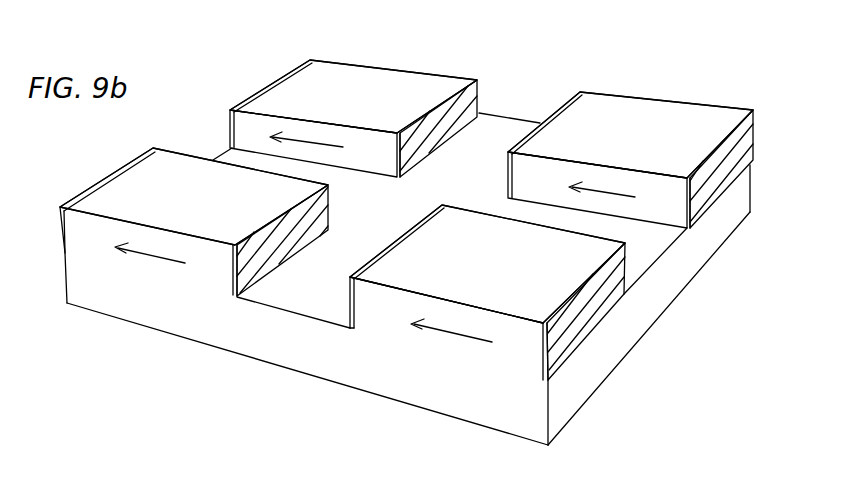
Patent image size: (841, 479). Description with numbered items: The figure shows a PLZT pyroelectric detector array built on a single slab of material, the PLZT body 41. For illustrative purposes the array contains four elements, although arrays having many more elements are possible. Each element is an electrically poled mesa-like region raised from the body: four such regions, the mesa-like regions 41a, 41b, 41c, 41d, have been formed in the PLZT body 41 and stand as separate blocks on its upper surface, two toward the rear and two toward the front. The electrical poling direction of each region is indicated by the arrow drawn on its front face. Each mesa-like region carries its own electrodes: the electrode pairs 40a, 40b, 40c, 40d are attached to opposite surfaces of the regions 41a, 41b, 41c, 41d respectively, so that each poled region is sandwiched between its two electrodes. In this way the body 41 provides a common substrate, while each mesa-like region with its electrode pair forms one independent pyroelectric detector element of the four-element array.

The PLZT body 41 is at (183, 327).
The electrode pair 40a is at (267, 260).
The electrode pair 40b is at (455, 110).
The electrode pair 40c is at (572, 335).
The electrode pair 40d is at (548, 117).
The electrically poled mesa-like region 41a is at (216, 203).
The electrically poled mesa-like region 41b is at (295, 102).
The electrically poled mesa-like region 41c is at (507, 279).
The electrically poled mesa-like region 41d is at (643, 123).